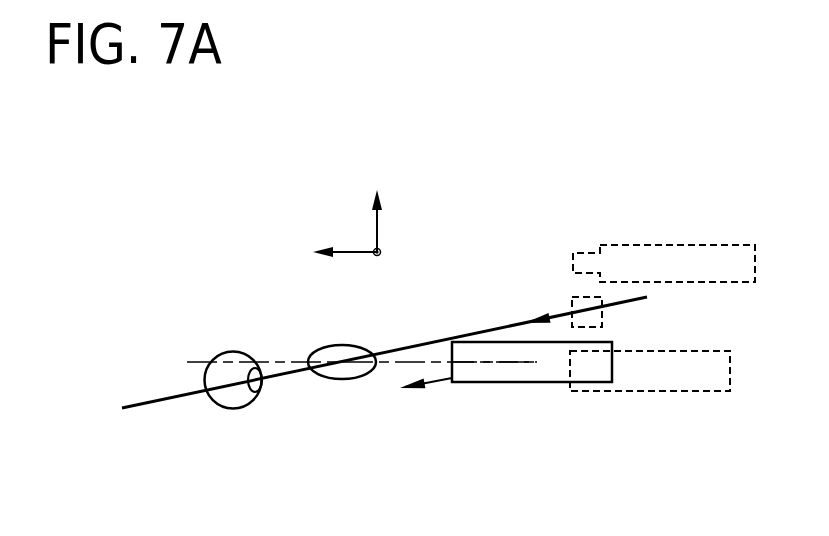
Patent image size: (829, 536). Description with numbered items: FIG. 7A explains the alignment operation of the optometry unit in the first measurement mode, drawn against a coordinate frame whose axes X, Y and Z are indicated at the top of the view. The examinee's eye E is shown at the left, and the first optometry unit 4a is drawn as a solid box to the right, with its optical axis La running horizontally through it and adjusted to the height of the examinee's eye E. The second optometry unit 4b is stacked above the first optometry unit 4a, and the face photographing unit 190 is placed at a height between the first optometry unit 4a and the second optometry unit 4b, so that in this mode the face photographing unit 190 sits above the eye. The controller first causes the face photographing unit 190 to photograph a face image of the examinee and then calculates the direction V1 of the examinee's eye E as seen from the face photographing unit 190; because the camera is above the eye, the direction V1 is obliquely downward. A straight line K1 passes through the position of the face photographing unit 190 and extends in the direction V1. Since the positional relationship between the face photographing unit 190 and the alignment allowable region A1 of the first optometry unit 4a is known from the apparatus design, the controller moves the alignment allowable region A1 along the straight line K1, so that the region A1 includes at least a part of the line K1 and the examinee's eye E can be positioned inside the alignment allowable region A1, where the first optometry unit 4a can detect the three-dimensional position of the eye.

The straight line K1 is at (155, 402).
The examinee's eye E is at (236, 350).
The alignment allowable region A1 is at (340, 380).
The direction of the examinee's eye V1 is at (550, 316).
The optical axis of the first optometry unit La is at (502, 362).
The first optometry unit 4a is at (553, 382).
The second optometry unit 4b is at (657, 245).
The face photographing unit 190 is at (602, 312).
The X axis X is at (380, 256).
The Y axis Y is at (376, 200).
The Z axis Z is at (334, 252).